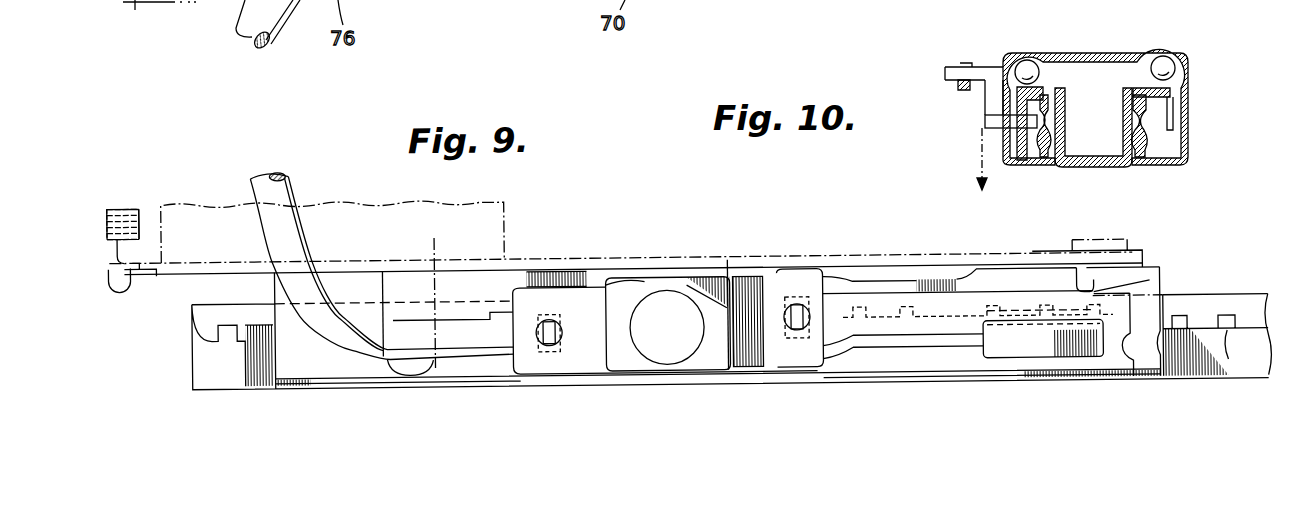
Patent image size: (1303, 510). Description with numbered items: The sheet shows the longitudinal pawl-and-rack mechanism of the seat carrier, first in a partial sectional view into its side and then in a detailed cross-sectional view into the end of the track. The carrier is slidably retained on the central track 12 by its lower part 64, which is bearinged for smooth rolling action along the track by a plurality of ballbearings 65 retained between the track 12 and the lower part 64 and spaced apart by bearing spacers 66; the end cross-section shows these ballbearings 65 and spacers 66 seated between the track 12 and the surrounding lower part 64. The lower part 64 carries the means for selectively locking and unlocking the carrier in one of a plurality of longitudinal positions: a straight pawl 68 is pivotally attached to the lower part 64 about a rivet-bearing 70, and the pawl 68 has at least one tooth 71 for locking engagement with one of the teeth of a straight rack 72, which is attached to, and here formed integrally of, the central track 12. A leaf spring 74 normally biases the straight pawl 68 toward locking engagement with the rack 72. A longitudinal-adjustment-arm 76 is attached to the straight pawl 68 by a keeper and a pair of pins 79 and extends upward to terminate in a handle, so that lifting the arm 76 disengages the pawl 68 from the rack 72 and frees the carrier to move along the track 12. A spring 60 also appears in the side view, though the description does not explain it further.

In FIG. 9, the central track 12 is at (1240, 312).
In FIG. 10, the central track 12 is at (1107, 170).
In FIG. 9, the return spring 60 is at (120, 203).
In FIG. 9, the lower part 64 is at (562, 276).
In FIG. 10, the lower part 64 is at (1100, 53).
In FIG. 10, the ballbearings 65 is at (1022, 62).
In FIG. 10, the bearing spacers 66 is at (1142, 60).
In FIG. 9, the straight pawl 68 is at (798, 354).
In FIG. 10, the straight pawl 68 is at (932, 72).
In FIG. 9, the rivet-bearing 70 is at (675, 333).
In FIG. 9, the tooth 71 is at (1047, 327).
In FIG. 10, the tooth 71 is at (987, 123).
In FIG. 9, the straight rack 72 is at (1228, 365).
In FIG. 10, the straight rack 72 is at (1027, 160).
In FIG. 9, the leaf spring 74 is at (1132, 288).
In FIG. 10, the leaf spring 74 is at (965, 92).
In FIG. 9, the longitudinal-adjustment-arm 76 is at (293, 193).
In FIG. 9, the pins 79 is at (562, 328).